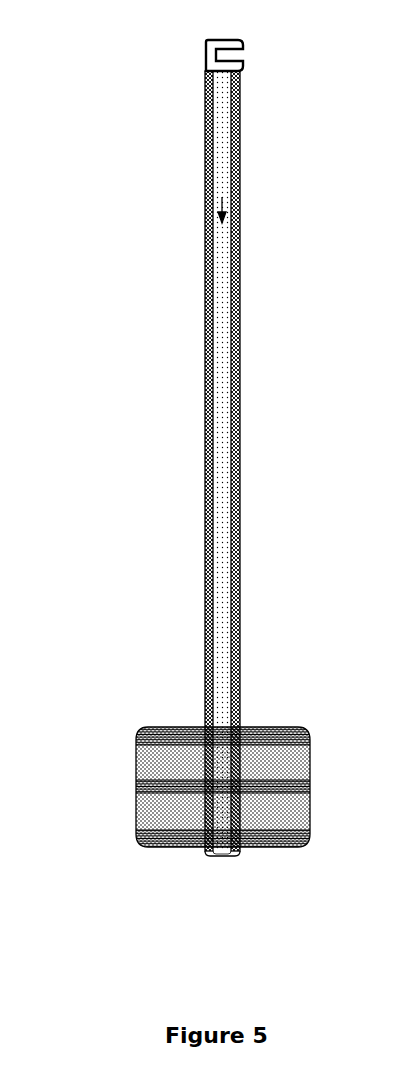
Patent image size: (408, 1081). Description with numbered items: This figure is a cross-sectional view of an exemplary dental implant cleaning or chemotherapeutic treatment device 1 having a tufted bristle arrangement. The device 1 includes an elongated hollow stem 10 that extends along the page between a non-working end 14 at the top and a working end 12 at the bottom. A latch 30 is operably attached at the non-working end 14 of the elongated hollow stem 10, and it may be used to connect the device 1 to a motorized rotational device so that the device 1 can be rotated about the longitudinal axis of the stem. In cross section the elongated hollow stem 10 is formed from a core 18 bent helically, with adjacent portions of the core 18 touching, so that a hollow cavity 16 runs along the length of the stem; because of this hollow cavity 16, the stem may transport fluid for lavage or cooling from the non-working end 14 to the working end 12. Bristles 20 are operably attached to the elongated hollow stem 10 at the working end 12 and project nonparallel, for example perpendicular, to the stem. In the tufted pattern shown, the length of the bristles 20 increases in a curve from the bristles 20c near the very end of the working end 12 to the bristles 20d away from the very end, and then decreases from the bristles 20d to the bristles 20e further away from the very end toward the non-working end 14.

The dental implant cleaning or chemotherapeutic treatment device 1 is at (66, 119).
The elongated hollow stem 10 is at (273, 463).
The working end 12 is at (222, 722).
The non-working end 14 is at (241, 99).
The hollow cavity 16 is at (227, 188).
The core 18 is at (241, 333).
The bristles 20 is at (185, 794).
The bristles near the very end of the working end 20c is at (152, 847).
The bristles away from the very end of the working end 20d is at (137, 815).
The bristles further away from the very end of the working end 20e is at (150, 730).
The latch 30 is at (245, 44).